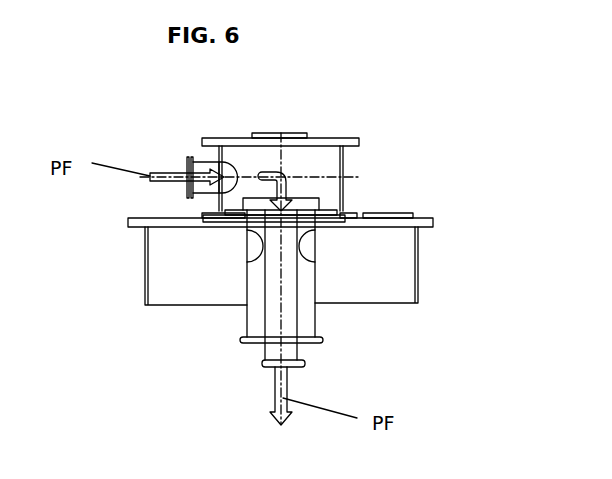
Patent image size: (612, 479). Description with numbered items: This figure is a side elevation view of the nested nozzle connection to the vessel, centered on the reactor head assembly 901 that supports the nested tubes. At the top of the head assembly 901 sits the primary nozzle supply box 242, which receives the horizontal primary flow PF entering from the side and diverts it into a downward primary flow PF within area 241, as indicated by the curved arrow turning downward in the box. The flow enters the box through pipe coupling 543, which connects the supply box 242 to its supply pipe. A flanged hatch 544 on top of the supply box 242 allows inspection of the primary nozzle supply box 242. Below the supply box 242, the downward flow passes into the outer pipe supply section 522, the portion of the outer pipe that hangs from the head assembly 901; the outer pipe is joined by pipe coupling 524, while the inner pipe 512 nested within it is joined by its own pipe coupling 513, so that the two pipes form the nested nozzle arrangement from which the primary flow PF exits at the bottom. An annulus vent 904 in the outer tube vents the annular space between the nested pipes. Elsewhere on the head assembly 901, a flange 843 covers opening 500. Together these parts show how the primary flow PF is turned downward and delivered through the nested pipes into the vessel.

The area 241 is at (297, 152).
The primary nozzle supply box 242 is at (343, 165).
The flanged hatch 544 is at (252, 134).
The pipe coupling 543 is at (185, 160).
The flange 843 is at (178, 221).
The reactor head 901 is at (418, 221).
The opening 500 is at (195, 237).
The annulus vent 904 is at (247, 246).
The outer pipe supply section 522 is at (245, 312).
The pipe coupling 524 is at (241, 341).
The inner pipe 512 is at (297, 322).
The pipe coupling 513 is at (262, 365).